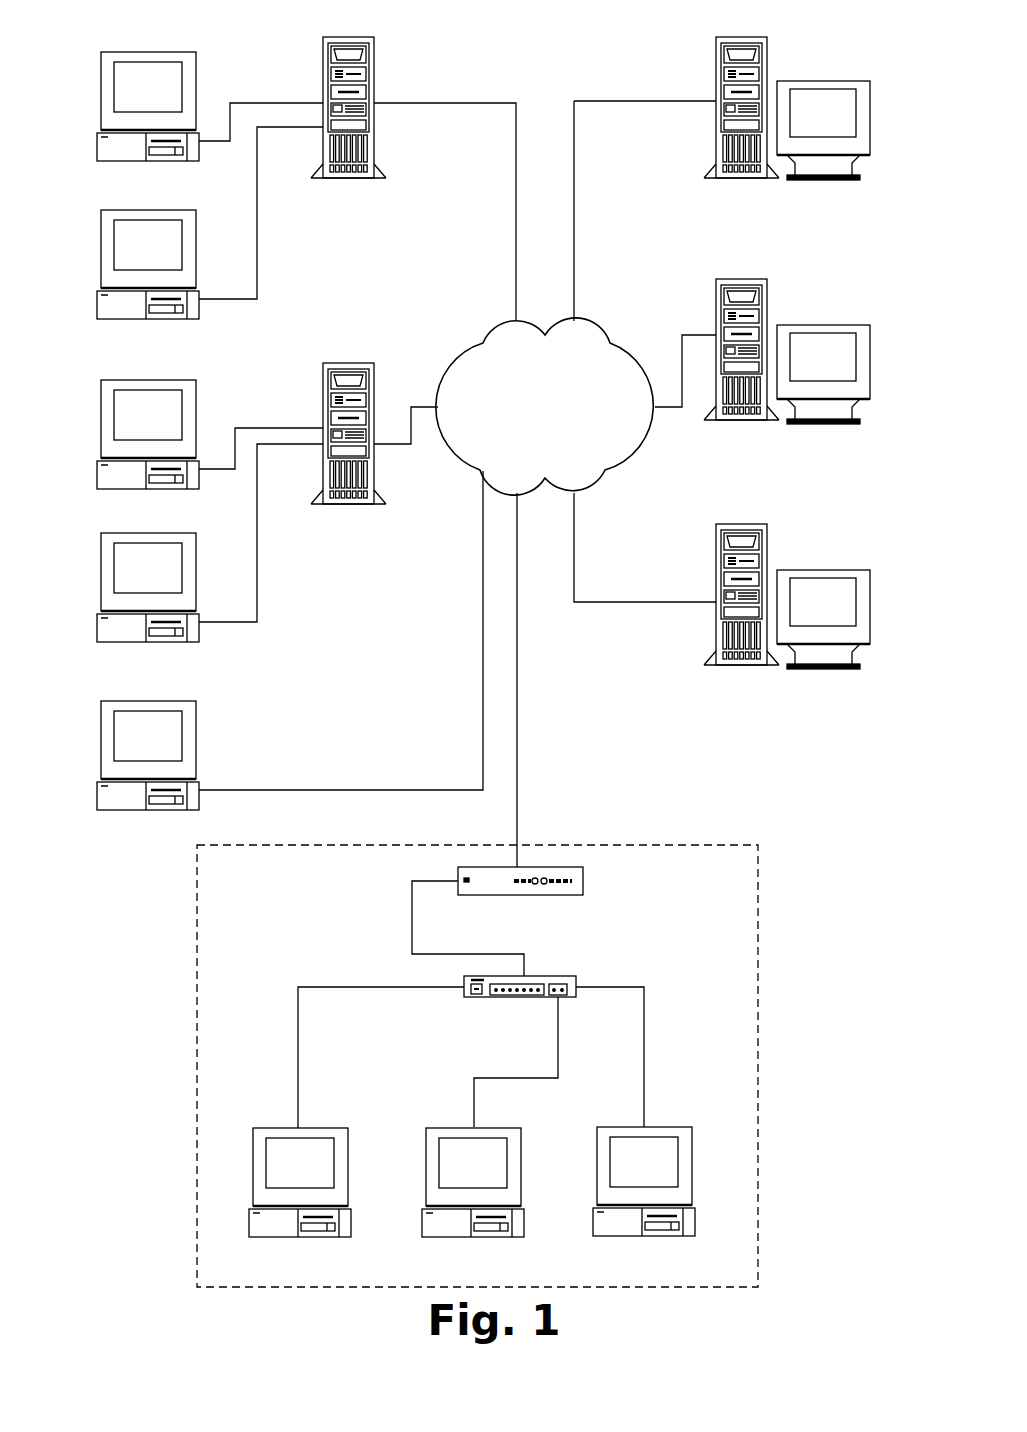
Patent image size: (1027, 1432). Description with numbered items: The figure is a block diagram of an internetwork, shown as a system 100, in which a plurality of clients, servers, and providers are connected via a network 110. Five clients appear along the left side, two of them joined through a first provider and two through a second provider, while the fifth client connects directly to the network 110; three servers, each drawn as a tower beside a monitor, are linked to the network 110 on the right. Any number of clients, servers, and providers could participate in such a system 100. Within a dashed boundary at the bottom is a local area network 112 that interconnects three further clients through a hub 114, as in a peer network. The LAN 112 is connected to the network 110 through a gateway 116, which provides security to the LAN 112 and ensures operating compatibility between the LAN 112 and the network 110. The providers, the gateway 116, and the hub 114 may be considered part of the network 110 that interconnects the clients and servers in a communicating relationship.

The system 100 is at (70, 54).
The network 110 is at (598, 333).
The local area network 112 is at (758, 980).
The hub 114 is at (578, 978).
The gateway 116 is at (587, 885).